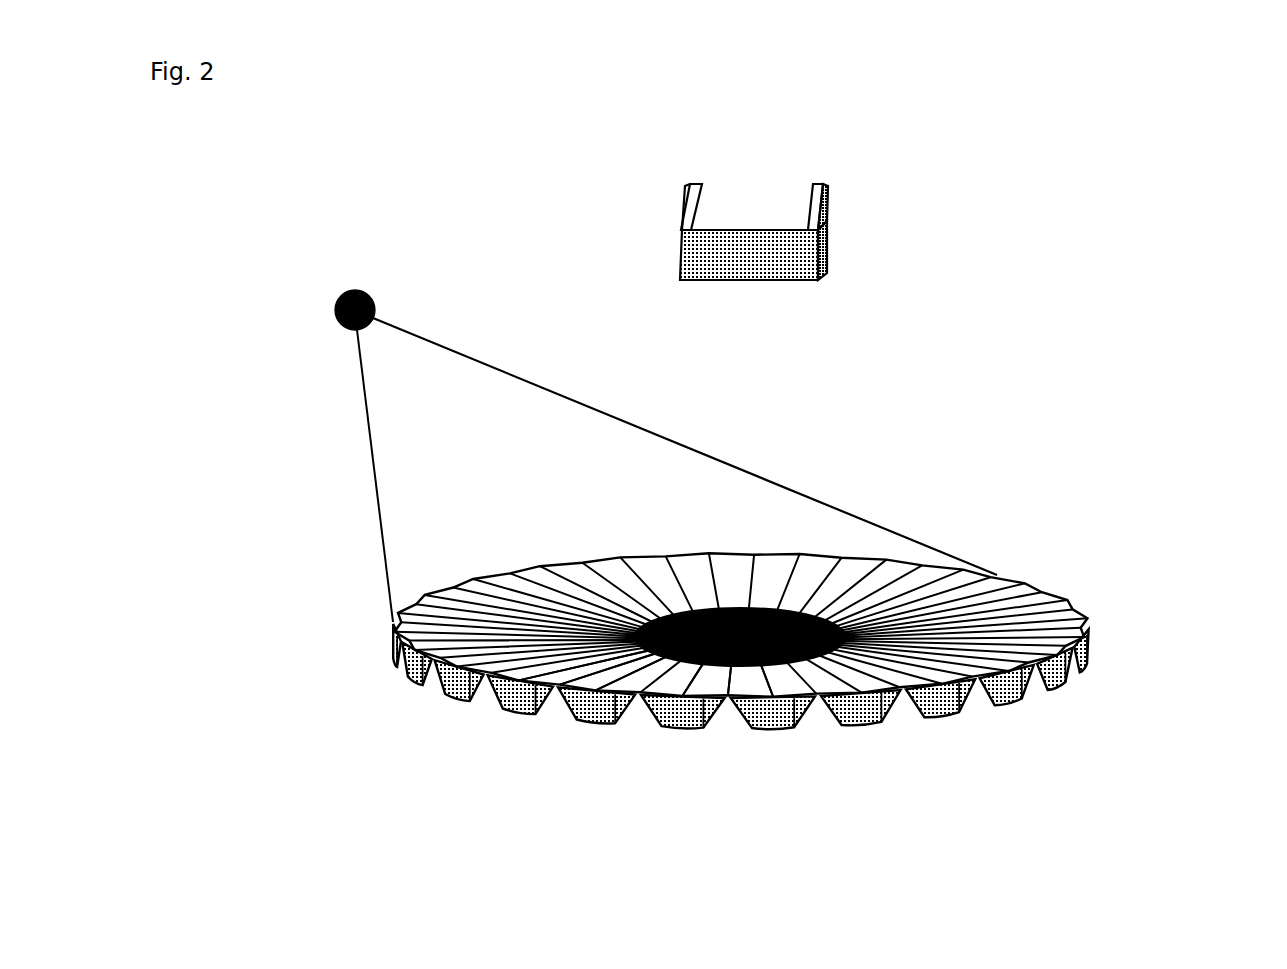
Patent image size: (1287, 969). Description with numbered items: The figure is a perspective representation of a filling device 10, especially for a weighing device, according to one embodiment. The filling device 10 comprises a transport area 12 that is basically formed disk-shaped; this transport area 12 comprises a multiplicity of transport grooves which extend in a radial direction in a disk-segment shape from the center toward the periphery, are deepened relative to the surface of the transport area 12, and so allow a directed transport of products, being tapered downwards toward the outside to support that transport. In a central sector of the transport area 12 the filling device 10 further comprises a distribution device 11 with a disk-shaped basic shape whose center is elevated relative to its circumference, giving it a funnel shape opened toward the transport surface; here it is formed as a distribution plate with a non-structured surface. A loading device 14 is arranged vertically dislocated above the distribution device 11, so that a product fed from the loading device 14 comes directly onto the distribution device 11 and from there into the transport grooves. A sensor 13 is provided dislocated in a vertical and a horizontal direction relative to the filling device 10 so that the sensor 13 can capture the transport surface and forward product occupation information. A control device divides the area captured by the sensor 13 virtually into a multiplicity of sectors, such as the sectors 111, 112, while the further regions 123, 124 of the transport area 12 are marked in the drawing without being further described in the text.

The filling device 10 is at (370, 615).
The distribution device 11 is at (920, 560).
The transport area 12 is at (893, 720).
The sensor 13 is at (337, 300).
The loading device 14 is at (828, 222).
The sector 111 is at (657, 727).
The sector 112 is at (793, 730).
The rim tooth 123 is at (1065, 672).
The rim tooth 124 is at (1022, 690).